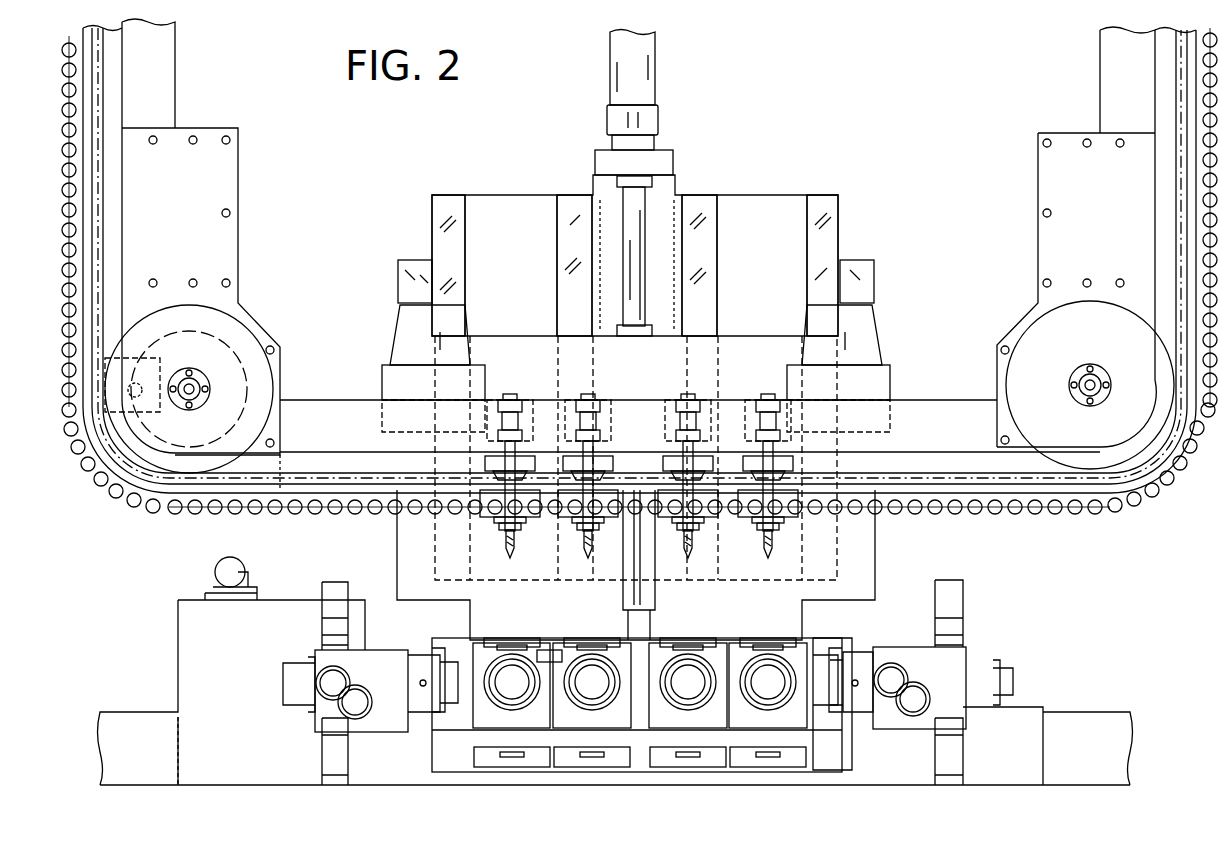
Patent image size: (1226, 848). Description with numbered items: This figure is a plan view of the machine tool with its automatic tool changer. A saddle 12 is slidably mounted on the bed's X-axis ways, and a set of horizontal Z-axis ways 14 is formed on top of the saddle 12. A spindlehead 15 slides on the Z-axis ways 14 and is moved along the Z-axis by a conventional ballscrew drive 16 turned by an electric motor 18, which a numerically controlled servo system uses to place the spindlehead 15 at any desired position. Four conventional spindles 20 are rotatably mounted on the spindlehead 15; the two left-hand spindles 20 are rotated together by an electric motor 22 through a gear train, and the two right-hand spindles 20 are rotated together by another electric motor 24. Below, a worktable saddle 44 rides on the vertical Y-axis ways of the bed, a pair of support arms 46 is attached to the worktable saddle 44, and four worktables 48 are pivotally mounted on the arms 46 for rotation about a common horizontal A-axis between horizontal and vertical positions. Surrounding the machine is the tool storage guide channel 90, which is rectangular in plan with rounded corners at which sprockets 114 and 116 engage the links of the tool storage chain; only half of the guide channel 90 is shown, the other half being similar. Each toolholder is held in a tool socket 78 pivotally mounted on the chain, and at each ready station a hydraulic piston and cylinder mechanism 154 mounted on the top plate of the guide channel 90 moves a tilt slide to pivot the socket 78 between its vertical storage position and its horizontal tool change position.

The saddle 12 is at (757, 216).
The Z-axis ways 14 is at (438, 210).
The spindlehead 15 is at (746, 360).
The ballscrew drive 16 is at (637, 292).
The electric motor 18 is at (650, 52).
The spindles 20 is at (508, 640).
The electric motor 22 is at (415, 325).
The electric motor 24 is at (865, 325).
The worktable saddle 44 is at (835, 640).
The support arms 46 is at (372, 670).
The worktables 48 is at (640, 702).
The tool socket 78 is at (1205, 140).
The guide channel 90 is at (1104, 461).
The sprocket 114 is at (1025, 325).
The sprocket 116 is at (215, 355).
The hydraulic piston and cylinder mechanism 154 is at (512, 408).